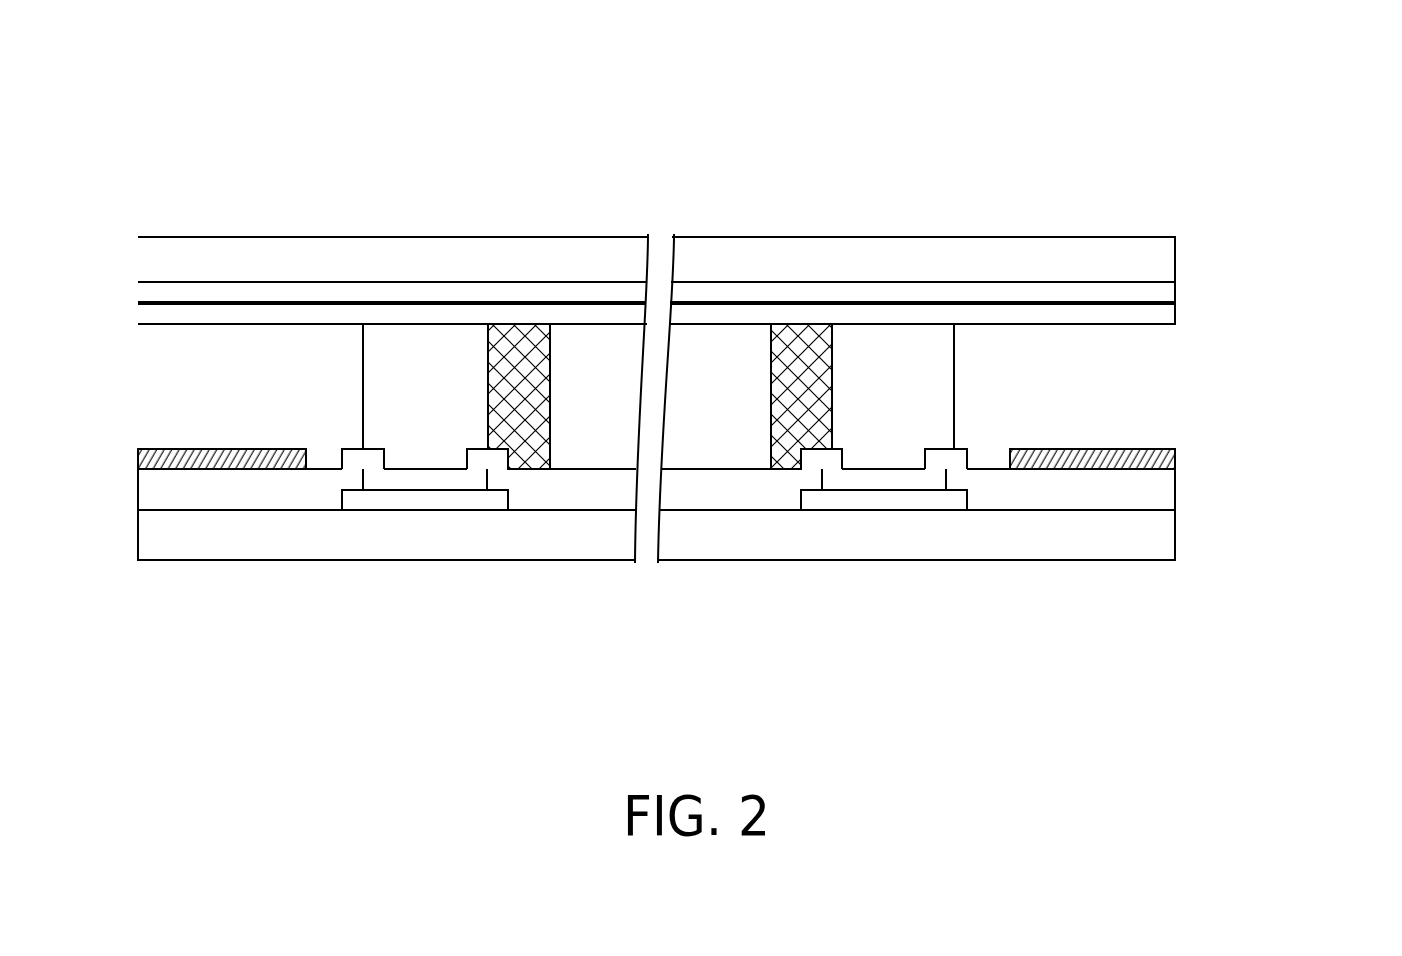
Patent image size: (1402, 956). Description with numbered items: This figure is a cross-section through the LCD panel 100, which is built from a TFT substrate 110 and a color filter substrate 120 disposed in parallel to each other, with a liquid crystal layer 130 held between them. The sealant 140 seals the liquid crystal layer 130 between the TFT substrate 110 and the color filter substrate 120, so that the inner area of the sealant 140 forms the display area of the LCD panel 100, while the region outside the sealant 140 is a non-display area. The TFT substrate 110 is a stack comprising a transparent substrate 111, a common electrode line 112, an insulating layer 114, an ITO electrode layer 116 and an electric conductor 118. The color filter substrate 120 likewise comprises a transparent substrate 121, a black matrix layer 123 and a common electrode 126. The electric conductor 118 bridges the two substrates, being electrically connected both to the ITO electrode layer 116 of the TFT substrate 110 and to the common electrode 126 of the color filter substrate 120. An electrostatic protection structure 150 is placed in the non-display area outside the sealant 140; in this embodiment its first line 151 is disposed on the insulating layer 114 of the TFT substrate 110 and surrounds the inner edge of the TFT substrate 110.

The LCD panel 100 is at (1326, 78).
The TFT substrate 110 is at (128, 470).
The transparent substrate 111 is at (1143, 547).
The common electrode line 112 is at (909, 504).
The insulating layer 114 is at (1158, 497).
The ITO electrode layer 116 is at (832, 477).
The electric conductor 118 is at (920, 390).
The color filter substrate 120 is at (128, 242).
The transparent substrate 121 is at (1132, 250).
The black matrix layer 123 is at (1152, 290).
The common electrode 126 is at (1165, 320).
The liquid crystal layer 130 is at (714, 343).
The sealant 140 is at (808, 340).
The electrostatic protection structure 150 is at (753, 460).
The first line 151 is at (1175, 452).